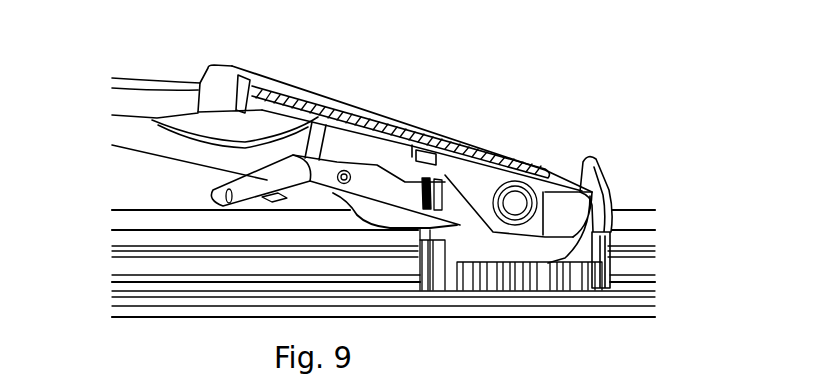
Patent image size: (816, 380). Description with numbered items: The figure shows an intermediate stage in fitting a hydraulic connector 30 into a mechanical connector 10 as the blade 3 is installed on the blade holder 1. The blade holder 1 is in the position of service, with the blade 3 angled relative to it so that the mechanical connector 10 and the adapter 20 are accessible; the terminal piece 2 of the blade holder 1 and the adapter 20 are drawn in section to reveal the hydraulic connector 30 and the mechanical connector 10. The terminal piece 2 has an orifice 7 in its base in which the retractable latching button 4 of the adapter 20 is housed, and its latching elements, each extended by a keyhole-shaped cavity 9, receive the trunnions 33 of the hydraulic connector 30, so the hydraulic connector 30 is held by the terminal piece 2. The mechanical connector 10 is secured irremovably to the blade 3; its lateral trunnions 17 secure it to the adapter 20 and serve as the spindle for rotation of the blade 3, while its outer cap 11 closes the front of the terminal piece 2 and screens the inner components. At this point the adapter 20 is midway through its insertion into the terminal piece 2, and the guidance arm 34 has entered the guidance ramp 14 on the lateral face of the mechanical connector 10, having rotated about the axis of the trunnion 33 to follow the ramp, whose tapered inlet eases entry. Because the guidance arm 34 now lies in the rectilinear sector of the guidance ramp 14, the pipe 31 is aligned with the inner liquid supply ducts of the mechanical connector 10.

The blade holder 1 is at (136, 96).
The terminal piece 2 is at (261, 80).
The blade 3 is at (115, 262).
The retractable latching button 4 is at (442, 135).
The orifice 7 is at (385, 120).
The cavity 9 is at (335, 165).
The mechanical connector 10 is at (570, 215).
The cap 11 is at (603, 180).
The guidance ramp 14 is at (517, 238).
The trunnions 17 is at (515, 202).
The adapter 20 is at (482, 168).
The hydraulic connector 30 is at (215, 188).
The pipe 31 is at (402, 183).
The trunnion 33 is at (345, 171).
The guidance arm 34 is at (428, 226).